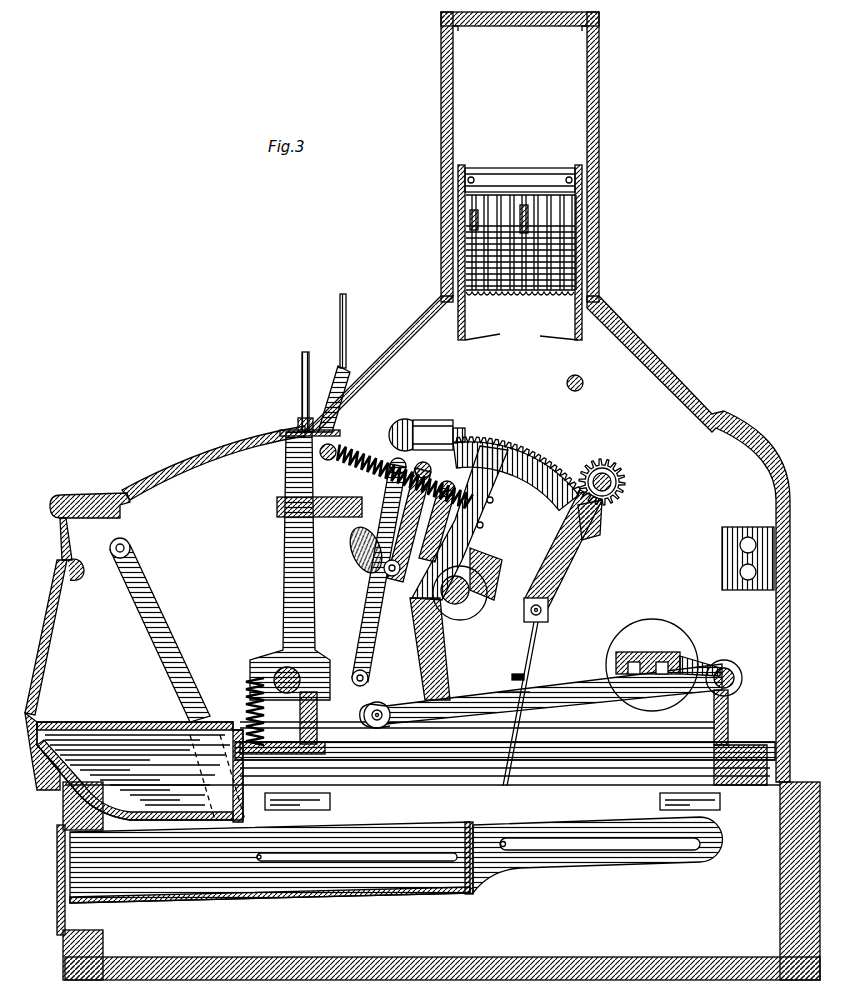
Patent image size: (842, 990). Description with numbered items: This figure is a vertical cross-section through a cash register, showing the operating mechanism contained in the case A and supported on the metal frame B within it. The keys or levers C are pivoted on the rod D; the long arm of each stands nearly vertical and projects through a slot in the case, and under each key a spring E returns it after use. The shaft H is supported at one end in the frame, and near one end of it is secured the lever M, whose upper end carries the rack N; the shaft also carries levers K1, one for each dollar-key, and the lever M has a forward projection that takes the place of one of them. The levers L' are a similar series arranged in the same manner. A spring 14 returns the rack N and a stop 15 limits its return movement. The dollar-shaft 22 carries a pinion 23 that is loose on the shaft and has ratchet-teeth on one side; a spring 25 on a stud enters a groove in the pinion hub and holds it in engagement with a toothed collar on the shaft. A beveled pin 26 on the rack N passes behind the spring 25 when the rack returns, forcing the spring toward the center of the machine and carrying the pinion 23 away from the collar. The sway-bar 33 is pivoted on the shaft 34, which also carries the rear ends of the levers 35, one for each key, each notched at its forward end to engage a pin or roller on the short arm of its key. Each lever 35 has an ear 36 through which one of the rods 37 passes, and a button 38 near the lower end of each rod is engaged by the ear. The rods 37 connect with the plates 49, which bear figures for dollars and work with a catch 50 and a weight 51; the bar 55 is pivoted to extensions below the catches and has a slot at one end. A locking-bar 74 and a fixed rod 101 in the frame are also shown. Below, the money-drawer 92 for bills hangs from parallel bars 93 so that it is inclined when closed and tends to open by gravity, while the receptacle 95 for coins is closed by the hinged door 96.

The case A is at (410, 352).
The metal frame B is at (590, 328).
The keys or levers C is at (290, 545).
The rod D is at (278, 670).
The spring E is at (247, 700).
The shaft H is at (462, 606).
The lever K1 is at (482, 565).
The levers L' is at (399, 572).
The lever M is at (498, 512).
The rack N is at (570, 420).
The spring 14 is at (396, 469).
The stop 15 is at (427, 426).
The dollar-shaft 22 is at (618, 488).
The pinion 23 is at (622, 470).
The spring 25 is at (563, 556).
The pin 26 is at (600, 533).
The sway-bar 33 is at (663, 665).
The shaft 34 is at (733, 668).
The levers 35 is at (580, 676).
The ear 36 is at (508, 692).
The rods 37 is at (512, 730).
The button 38 is at (524, 676).
The plates 49 is at (560, 252).
The catch 50 is at (520, 180).
The weight 51 is at (530, 224).
The bar 55 is at (470, 224).
The locking-bar 74 is at (319, 515).
The money-drawer 92 is at (250, 866).
The parallel bars 93 is at (172, 656).
The receptacle for coins 95 is at (135, 767).
The hinged door 96 is at (54, 616).
The fixed rod 101 is at (584, 385).